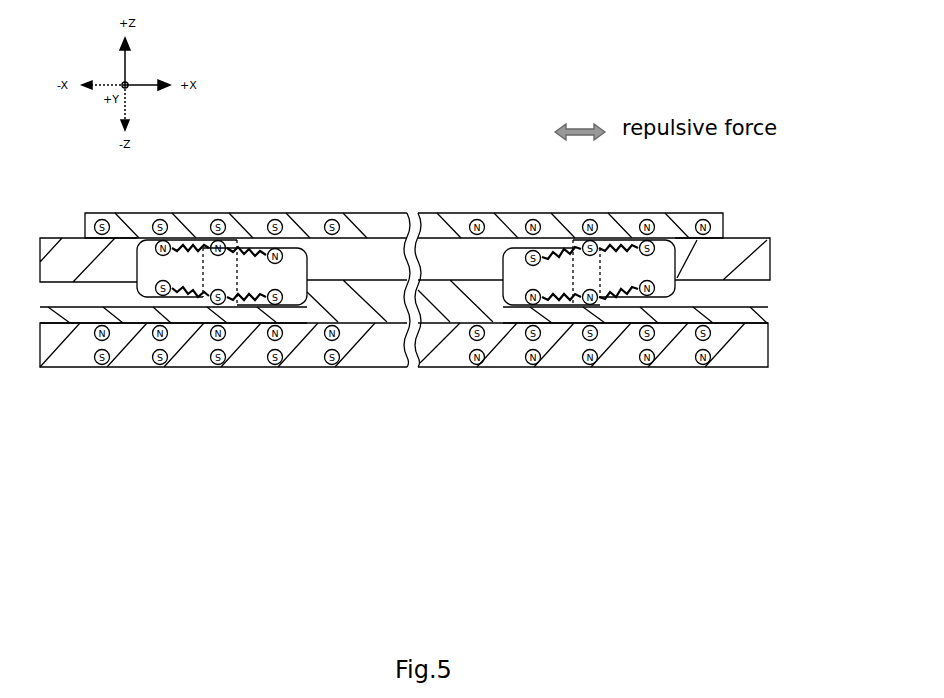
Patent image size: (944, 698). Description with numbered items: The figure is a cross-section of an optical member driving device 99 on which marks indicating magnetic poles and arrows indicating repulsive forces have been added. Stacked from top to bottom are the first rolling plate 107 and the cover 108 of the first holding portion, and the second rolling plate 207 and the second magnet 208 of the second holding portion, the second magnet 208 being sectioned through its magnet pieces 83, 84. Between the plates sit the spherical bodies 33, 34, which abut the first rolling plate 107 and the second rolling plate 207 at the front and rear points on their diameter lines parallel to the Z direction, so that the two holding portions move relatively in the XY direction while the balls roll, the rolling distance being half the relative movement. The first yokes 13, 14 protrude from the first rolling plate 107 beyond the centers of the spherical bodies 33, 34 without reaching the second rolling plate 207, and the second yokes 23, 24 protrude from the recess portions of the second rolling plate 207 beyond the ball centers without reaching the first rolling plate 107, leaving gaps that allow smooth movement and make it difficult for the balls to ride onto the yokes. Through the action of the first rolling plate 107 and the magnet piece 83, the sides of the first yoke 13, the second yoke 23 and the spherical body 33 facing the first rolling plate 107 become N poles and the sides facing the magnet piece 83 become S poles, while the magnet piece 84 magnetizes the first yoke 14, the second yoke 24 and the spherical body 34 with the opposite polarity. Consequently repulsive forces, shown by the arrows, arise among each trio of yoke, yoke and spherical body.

The magnetic structure 99 is at (362, 170).
The first rolling plate 107 is at (723, 235).
The cover 108 is at (770, 258).
The second rolling plate 207 is at (768, 317).
The second magnet 208 is at (768, 347).
The second yoke 23 is at (307, 268).
The second yoke 24 is at (503, 268).
The first yoke 13 is at (137, 290).
The first yoke 14 is at (675, 290).
The spherical body 33 is at (205, 300).
The magnet piece 83 is at (287, 367).
The magnet piece 84 is at (567, 367).
The spherical body 34 is at (599, 302).